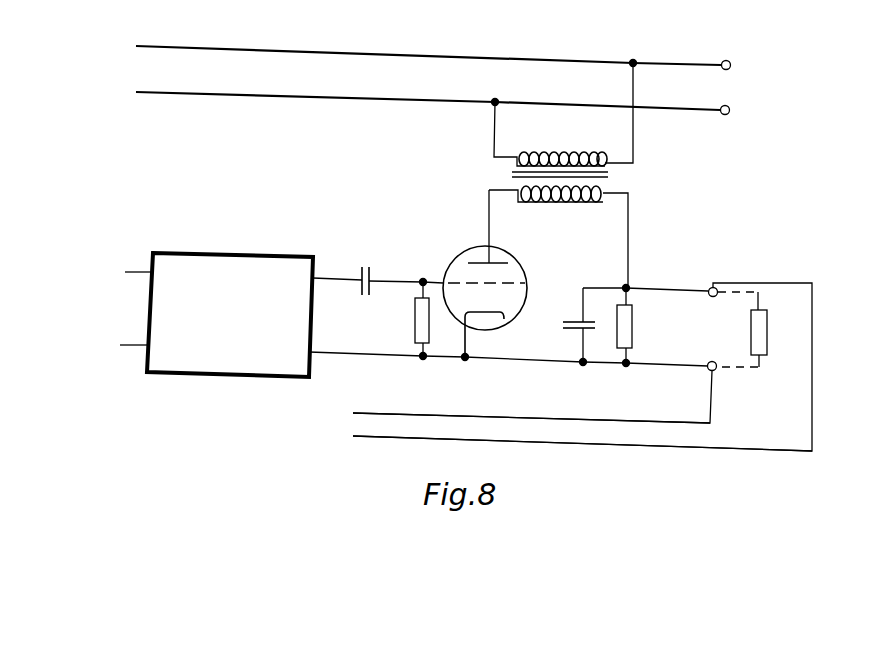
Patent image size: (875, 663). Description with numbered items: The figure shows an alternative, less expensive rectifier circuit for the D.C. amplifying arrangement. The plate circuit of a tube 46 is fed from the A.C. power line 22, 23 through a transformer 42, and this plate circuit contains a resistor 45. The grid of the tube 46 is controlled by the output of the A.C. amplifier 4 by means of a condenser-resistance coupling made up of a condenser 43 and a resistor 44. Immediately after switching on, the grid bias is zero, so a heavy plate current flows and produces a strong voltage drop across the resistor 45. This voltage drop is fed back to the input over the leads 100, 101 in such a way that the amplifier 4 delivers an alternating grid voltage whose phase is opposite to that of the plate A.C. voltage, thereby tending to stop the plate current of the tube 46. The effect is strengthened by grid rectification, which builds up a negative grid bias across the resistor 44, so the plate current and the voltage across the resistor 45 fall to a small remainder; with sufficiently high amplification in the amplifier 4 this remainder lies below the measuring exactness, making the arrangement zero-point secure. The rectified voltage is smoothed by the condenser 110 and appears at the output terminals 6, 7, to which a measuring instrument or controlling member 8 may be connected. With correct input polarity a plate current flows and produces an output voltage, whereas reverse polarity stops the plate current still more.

The amplifier 4 is at (414, 315).
The output terminal 6 is at (582, 355).
The output terminal 7 is at (555, 377).
The measuring instrument or controlling member 8 is at (768, 329).
The A.C. power line 22 is at (451, 62).
The A.C. power line 23 is at (451, 107).
The transformer 42 is at (577, 175).
The condenser of condenser-resistance coupling 43 is at (400, 266).
The resistor of condenser-resistance coupling 44 is at (405, 319).
The resistor 45 is at (645, 326).
The tube 46 is at (499, 275).
The lead 100 is at (531, 411).
The lead 101 is at (582, 438).
The condenser 110 is at (573, 327).